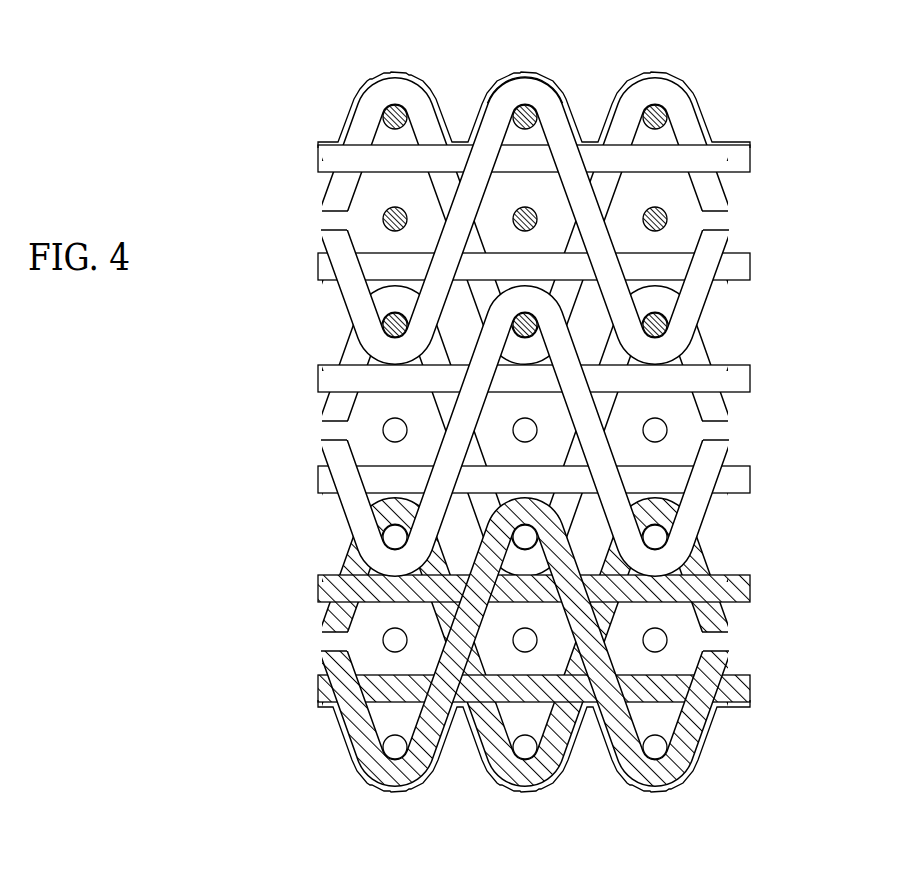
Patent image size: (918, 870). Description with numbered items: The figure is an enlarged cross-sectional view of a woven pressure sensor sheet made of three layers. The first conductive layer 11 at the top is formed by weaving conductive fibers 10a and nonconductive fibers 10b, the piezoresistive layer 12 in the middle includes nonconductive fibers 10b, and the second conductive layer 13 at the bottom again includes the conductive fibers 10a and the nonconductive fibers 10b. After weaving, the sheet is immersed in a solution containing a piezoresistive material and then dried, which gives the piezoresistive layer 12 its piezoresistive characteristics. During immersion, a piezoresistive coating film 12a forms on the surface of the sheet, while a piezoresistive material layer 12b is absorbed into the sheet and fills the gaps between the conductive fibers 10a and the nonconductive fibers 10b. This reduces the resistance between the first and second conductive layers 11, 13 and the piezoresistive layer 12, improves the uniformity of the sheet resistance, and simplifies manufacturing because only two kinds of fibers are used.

The conductive fibers 10a is at (527, 104).
The nonconductive fibers 10b is at (659, 93).
The first conductive layer 11 is at (270, 78).
The piezoresistive layer 12 is at (270, 370).
The second conductive layer 13 is at (270, 578).
The piezoresistive coating film 12a is at (710, 141).
The piezoresistive material layer 12b is at (742, 523).